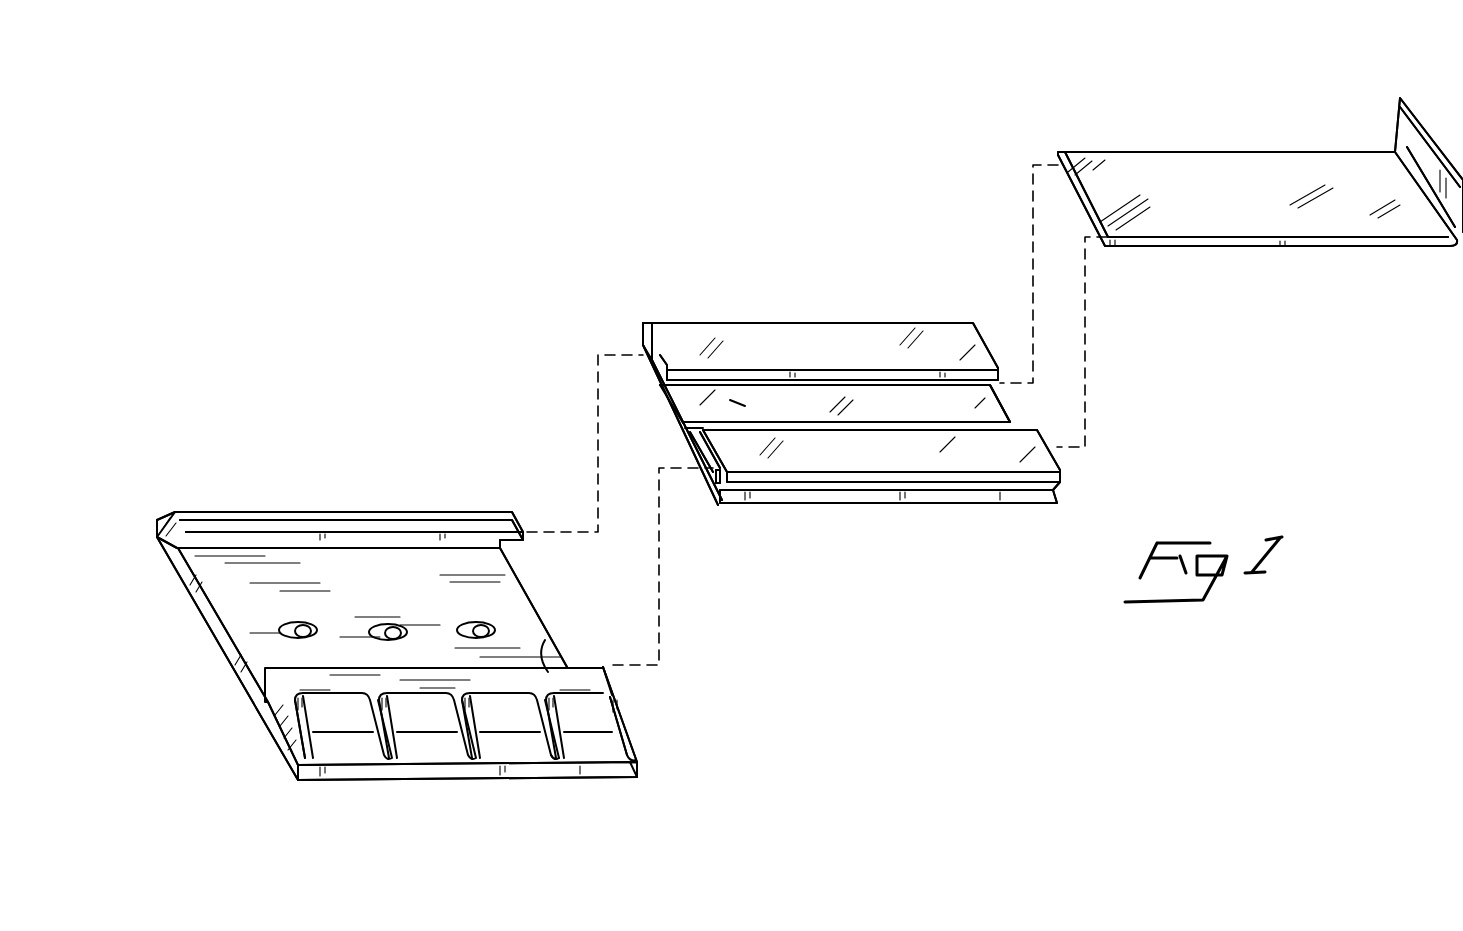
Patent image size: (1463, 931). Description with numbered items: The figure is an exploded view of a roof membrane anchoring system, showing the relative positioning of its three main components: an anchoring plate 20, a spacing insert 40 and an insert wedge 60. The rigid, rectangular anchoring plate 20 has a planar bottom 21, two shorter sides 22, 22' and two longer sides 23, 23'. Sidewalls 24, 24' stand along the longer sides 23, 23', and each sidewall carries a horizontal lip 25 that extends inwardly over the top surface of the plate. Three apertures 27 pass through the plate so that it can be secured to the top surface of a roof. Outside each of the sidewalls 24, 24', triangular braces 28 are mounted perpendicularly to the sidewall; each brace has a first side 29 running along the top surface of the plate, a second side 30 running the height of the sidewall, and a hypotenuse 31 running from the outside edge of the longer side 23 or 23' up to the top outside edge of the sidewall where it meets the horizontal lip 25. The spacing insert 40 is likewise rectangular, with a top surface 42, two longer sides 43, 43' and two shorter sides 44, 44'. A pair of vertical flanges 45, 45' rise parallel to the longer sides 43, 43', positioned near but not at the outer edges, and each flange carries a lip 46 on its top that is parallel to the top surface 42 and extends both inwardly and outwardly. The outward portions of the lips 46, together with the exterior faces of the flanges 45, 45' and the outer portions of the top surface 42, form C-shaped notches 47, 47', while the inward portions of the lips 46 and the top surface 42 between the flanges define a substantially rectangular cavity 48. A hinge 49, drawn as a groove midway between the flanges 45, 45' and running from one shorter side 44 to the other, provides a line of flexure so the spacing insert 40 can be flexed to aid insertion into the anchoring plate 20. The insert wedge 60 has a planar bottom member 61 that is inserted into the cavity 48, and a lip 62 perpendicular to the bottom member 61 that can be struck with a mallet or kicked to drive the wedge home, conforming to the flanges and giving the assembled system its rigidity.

The anchoring plate 20 is at (250, 722).
The planar bottom 21 is at (237, 683).
The shorter side 22 is at (221, 658).
The shorter side 22' is at (549, 607).
The longer side 23 is at (467, 792).
The longer side 23' is at (340, 508).
The sidewall 24 is at (456, 759).
The sidewall 24' is at (127, 534).
The horizontal lip 25 is at (462, 518).
The apertures 27 is at (483, 632).
The triangular braces 28 is at (287, 743).
The first side 29 is at (610, 750).
The second side 30 is at (597, 705).
The hypotenuse 31 is at (287, 773).
The spacing insert 40 is at (993, 343).
The top surface 42 is at (970, 395).
The longer side 43 is at (890, 524).
The longer side 43' is at (598, 364).
The shorter side 44 is at (667, 425).
The shorter side 44' is at (1064, 414).
The vertical flange 45 is at (690, 492).
The vertical flange 45' is at (693, 323).
The lip 46 is at (782, 332).
The C-shaped notch 47 is at (736, 529).
The C-shaped notch 47' is at (619, 312).
The rectangular-shaped cavity 48 is at (743, 403).
The hinge 49 is at (680, 433).
The insert wedge 60 is at (1282, 247).
The planar bottom member 61 is at (1212, 162).
The lip 62 is at (1457, 213).